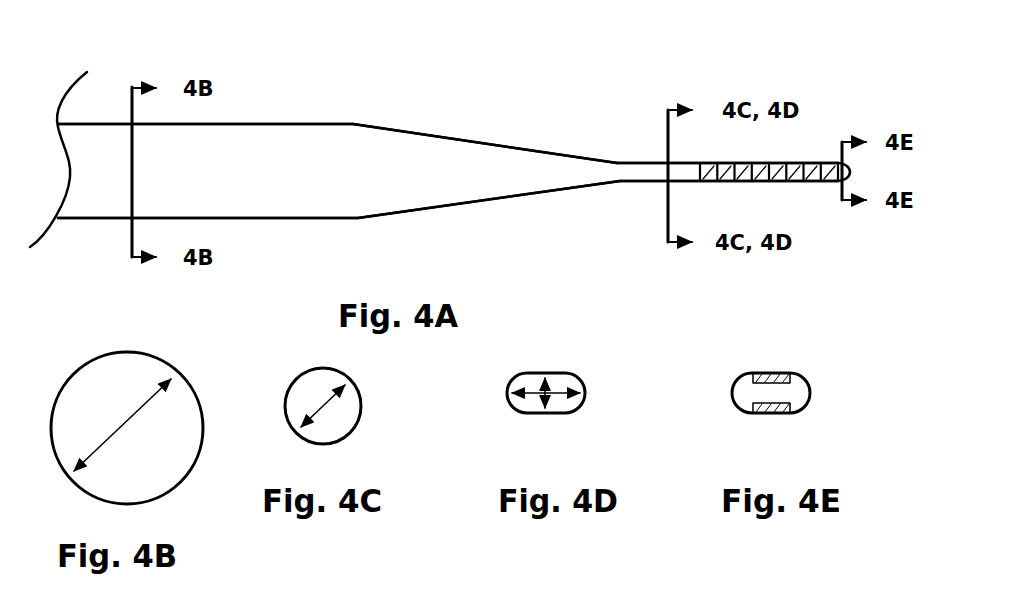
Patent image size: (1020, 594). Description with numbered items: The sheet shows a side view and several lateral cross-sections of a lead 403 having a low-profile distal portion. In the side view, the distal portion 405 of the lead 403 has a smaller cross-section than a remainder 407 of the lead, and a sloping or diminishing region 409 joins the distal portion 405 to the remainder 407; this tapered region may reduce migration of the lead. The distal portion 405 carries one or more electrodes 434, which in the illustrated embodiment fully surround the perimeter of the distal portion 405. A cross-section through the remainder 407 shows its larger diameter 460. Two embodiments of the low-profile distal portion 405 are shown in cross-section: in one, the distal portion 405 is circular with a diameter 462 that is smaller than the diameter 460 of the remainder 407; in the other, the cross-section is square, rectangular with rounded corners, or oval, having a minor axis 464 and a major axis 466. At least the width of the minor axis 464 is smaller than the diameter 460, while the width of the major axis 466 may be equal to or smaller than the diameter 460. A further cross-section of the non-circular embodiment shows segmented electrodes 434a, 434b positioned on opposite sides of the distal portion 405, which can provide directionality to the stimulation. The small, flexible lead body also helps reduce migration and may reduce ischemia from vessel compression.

In FIG. 4A, the lead 403 is at (540, 82).
In FIG. 4A, the distal portion 405 is at (813, 181).
In FIG. 4C, the distal portion 405 is at (360, 393).
In FIG. 4D, the distal portion 405 is at (575, 375).
In FIG. 4E, the distal portion 405 is at (800, 375).
In FIG. 4A, the remainder of the lead 407 is at (262, 124).
In FIG. 4B, the remainder of the lead 407 is at (160, 360).
In FIG. 4A, the sloping or diminishing region 409 is at (425, 131).
In FIG. 4A, the electrodes 434 is at (820, 163).
In FIG. 4E, the segmented electrode 434a is at (760, 373).
In FIG. 4E, the segmented electrode 434b is at (760, 413).
In FIG. 4B, the diameter 460 is at (122, 424).
In FIG. 4C, the diameter 462 is at (316, 408).
In FIG. 4D, the minor axis 464 is at (542, 378).
In FIG. 4D, the major axis 466 is at (532, 396).